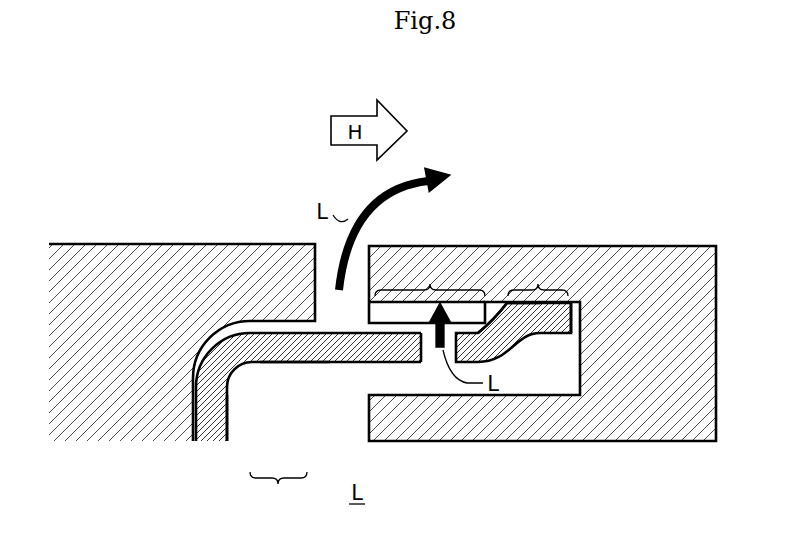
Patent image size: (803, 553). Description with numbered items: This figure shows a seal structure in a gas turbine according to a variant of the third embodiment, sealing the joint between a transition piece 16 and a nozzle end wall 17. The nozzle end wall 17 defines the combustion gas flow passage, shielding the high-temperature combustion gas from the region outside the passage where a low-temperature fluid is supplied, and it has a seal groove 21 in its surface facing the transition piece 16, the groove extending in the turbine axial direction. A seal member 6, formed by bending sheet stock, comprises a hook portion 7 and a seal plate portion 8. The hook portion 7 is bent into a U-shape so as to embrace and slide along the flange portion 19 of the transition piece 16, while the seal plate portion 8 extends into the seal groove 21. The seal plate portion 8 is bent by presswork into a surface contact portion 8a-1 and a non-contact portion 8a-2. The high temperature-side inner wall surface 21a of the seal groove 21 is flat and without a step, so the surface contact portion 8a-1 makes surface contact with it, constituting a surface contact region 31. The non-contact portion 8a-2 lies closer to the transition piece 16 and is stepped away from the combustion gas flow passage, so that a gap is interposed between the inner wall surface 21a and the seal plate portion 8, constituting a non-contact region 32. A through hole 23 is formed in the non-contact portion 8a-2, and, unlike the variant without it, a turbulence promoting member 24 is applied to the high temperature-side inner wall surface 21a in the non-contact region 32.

The transition piece 16 is at (174, 244).
The flange portion 19 is at (130, 441).
The nozzle end wall 17 is at (663, 442).
The turbulence promoting member 24 is at (369, 311).
The non-contact portion 8a-2 is at (326, 364).
The surface contact portion 8a-1 is at (578, 322).
The hook portion 7 is at (229, 426).
The seal plate portion 8 is at (284, 364).
The seal member 6 is at (278, 495).
The seal groove 21 is at (524, 384).
The high temperature-side inner wall surface 21a is at (483, 318).
The through hole 23 is at (425, 351).
The non-contact region 32 is at (430, 277).
The surface contact region 31 is at (538, 277).